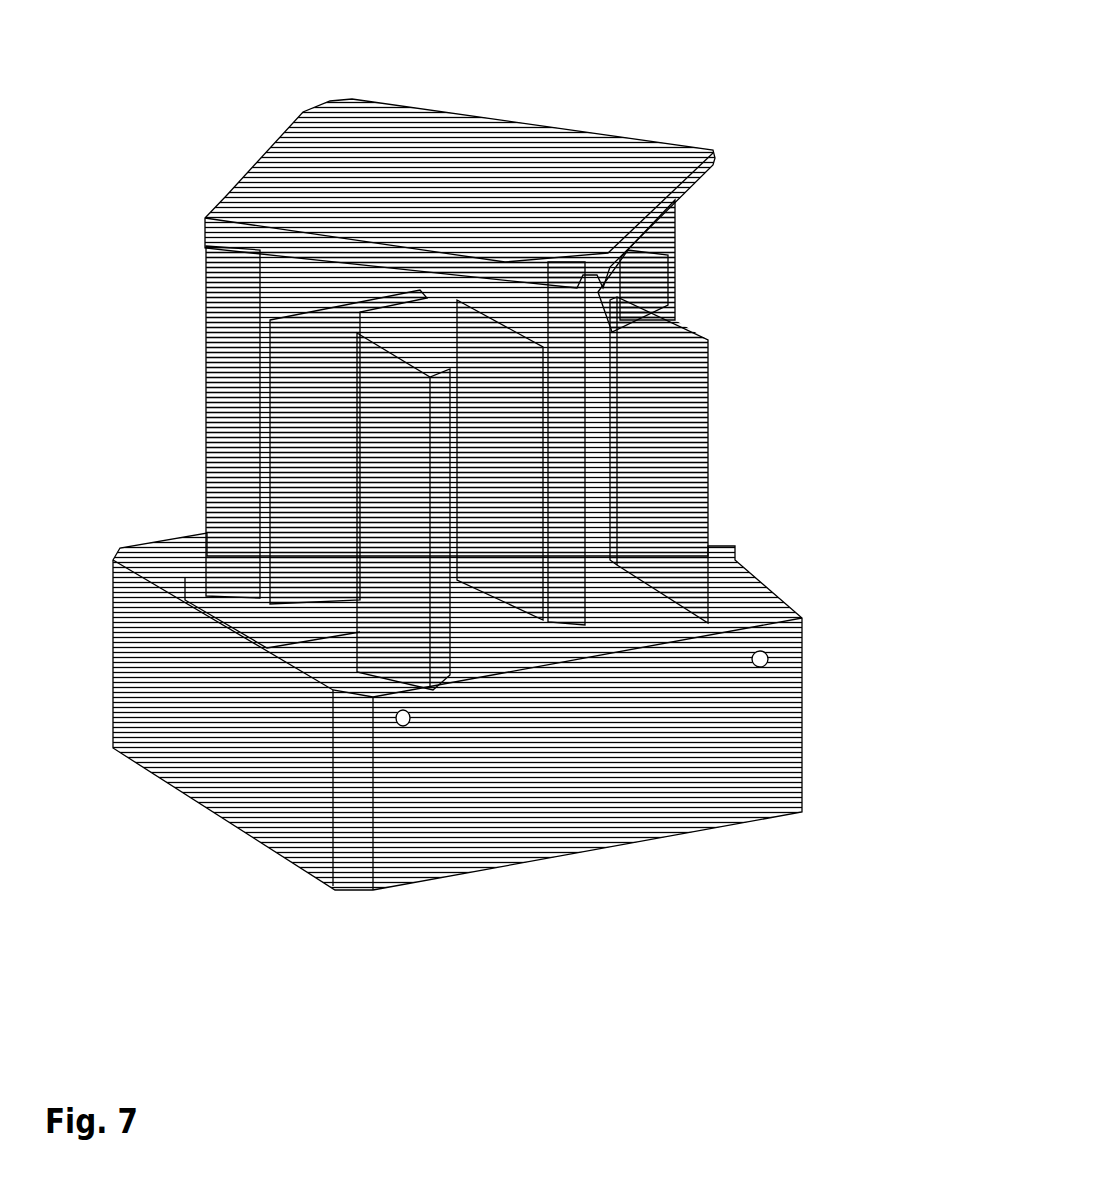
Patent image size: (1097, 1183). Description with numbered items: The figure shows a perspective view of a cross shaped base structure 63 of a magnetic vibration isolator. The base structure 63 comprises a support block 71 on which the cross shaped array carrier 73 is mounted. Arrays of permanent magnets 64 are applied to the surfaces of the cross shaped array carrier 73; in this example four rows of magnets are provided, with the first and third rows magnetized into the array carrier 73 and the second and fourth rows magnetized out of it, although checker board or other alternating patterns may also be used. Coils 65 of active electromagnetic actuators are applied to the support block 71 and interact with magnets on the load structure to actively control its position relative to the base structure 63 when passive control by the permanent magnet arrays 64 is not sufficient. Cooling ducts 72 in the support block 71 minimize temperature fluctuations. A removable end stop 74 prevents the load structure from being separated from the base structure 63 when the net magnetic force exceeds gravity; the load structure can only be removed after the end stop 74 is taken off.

The base structure 63 is at (745, 52).
The arrays of permanent magnets 64 is at (398, 318).
The coils 65 is at (655, 471).
The support block 71 is at (762, 687).
The cooling ducts 72 is at (758, 650).
The cross shaped array carrier 73 is at (568, 443).
The removable end stop 74 is at (677, 198).